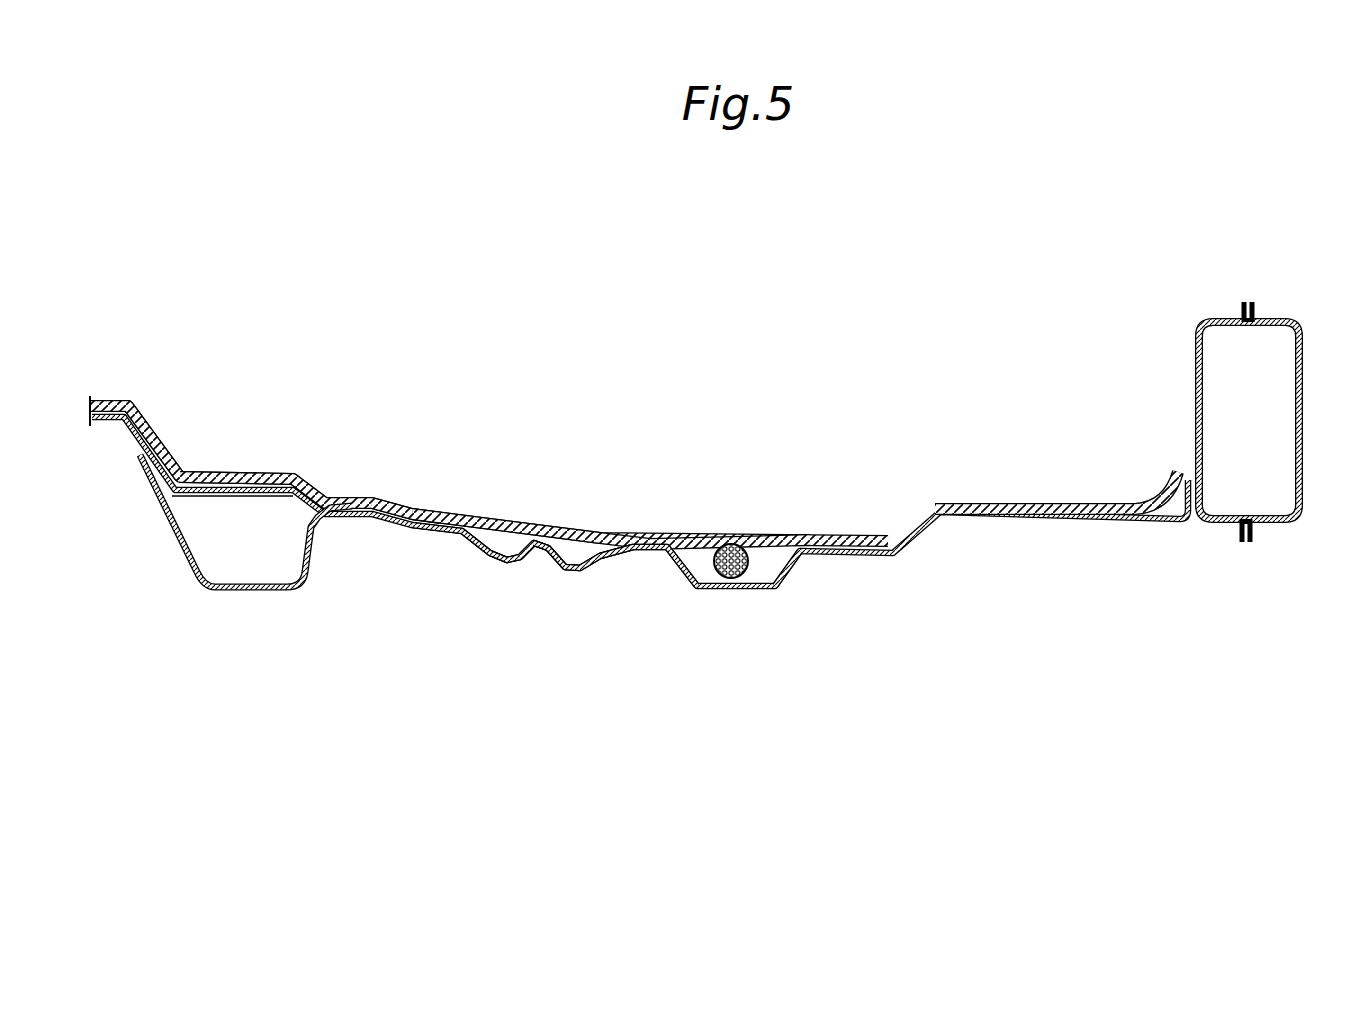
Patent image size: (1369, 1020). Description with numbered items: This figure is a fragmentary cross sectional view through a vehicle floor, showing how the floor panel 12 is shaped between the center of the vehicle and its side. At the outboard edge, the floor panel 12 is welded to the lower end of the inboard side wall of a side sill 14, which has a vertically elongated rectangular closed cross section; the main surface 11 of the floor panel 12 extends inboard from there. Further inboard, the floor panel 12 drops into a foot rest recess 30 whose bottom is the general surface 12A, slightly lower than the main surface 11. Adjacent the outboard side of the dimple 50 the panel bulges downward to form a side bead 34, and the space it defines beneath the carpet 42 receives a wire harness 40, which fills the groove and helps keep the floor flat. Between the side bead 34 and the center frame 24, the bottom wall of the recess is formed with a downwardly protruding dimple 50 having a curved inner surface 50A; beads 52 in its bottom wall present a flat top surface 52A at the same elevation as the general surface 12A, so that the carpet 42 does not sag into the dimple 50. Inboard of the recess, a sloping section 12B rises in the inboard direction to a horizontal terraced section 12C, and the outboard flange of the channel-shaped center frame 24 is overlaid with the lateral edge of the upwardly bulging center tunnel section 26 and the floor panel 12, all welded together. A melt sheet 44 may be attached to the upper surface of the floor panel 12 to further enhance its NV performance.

The main surface 11 is at (1025, 505).
The floor panel 12 is at (860, 565).
The general surface 12A is at (645, 530).
The sloping section 12B is at (410, 500).
The terraced section 12C is at (334, 474).
The side sill 14 is at (1195, 358).
The center frame 24 is at (262, 592).
The center tunnel section 26 is at (104, 416).
The foot rest recess 30 is at (830, 535).
The side bead 34 is at (780, 560).
The wire harness 40 is at (719, 544).
The carpet 42 is at (500, 508).
The melt sheet 44 is at (786, 532).
The dimple 50 is at (590, 545).
The curved inner surface 50A is at (506, 564).
The bead 52 is at (568, 571).
The flat top surface 52A is at (541, 536).